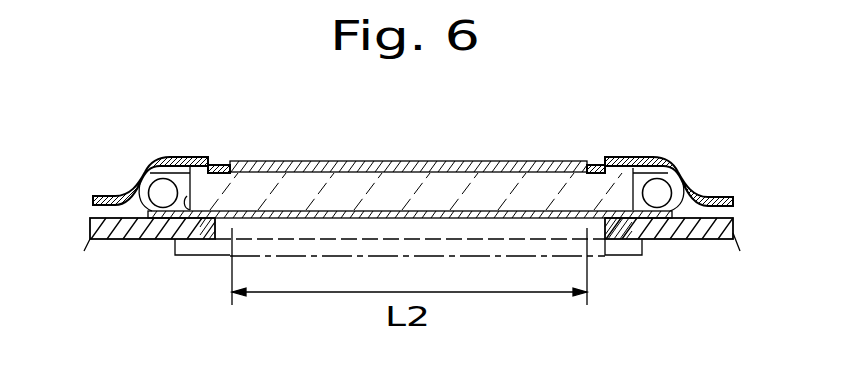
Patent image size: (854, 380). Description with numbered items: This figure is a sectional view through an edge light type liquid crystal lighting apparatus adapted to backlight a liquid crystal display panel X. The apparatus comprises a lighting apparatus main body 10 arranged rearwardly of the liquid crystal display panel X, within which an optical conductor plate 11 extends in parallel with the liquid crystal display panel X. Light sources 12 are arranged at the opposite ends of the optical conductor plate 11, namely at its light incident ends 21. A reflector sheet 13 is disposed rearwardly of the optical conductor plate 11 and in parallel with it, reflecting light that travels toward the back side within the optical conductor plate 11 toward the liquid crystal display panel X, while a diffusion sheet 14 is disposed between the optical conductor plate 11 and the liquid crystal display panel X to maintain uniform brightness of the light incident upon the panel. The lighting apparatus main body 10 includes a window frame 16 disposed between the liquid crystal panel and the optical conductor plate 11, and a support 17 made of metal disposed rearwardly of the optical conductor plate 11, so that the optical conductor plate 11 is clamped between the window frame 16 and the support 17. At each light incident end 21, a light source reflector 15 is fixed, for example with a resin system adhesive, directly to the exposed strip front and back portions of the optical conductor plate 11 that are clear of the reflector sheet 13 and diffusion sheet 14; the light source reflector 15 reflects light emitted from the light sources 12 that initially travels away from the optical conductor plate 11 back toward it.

The lighting apparatus main body 10 is at (690, 148).
The optical conductor plate 11 is at (532, 197).
The light source 12 is at (162, 200).
The reflector sheet 13 is at (445, 160).
The diffusion sheet 14 is at (300, 212).
The light source reflector 15 is at (697, 170).
The window frame 16 is at (117, 240).
The support 17 is at (160, 157).
The light incident end 21 is at (197, 257).
The liquid crystal display panel X is at (187, 257).